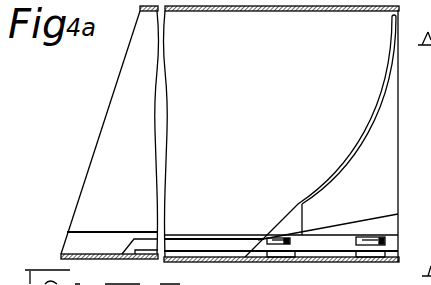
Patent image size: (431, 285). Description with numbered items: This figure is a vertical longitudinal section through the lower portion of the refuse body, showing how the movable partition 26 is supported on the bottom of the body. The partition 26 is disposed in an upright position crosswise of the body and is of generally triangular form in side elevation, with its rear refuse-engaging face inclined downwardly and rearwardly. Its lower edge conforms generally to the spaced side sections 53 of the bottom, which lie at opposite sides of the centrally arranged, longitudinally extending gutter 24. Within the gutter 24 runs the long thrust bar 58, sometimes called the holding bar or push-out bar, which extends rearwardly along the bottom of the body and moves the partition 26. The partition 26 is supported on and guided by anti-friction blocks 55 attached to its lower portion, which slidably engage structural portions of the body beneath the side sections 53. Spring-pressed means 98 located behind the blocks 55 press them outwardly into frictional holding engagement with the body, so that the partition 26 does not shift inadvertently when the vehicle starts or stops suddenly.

The gutter 24 is at (90, 253).
The side sections 53 is at (113, 230).
The thrust bar 58 is at (201, 243).
The movable partition 26 is at (368, 130).
The anti-friction blocks 55 is at (272, 251).
The spring-pressed means 98 is at (290, 242).